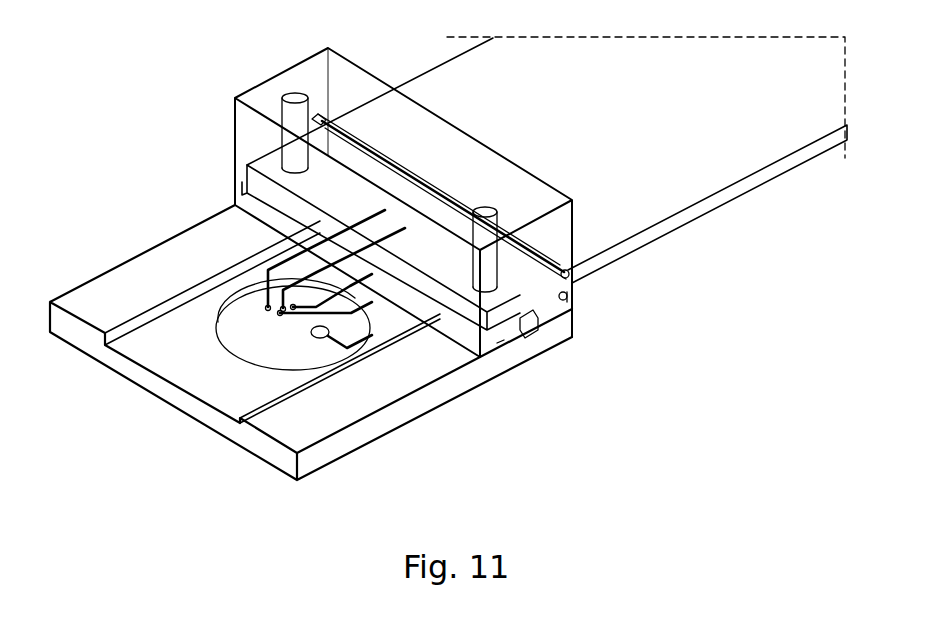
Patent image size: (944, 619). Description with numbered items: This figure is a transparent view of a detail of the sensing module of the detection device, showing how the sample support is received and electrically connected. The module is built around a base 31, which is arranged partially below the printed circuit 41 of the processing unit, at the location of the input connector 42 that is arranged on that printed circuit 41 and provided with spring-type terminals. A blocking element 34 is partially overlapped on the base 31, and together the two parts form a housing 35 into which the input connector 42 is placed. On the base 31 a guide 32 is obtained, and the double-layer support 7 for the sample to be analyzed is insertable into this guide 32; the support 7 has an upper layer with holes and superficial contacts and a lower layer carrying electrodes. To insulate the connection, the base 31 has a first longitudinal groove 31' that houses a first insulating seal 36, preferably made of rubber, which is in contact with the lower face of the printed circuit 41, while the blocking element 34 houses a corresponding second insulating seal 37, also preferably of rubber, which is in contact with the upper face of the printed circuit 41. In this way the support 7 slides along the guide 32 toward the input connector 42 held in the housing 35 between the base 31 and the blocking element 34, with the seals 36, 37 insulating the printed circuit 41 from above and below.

The double-layer support 7 is at (195, 320).
The base 31 is at (311, 355).
The first longitudinal groove 31' is at (587, 350).
The guide 32 is at (212, 392).
The blocking element 34 is at (262, 98).
The housing 35 is at (531, 335).
The first insulating seal 36 is at (570, 300).
The second insulating seal 37 is at (571, 279).
The printed circuit 41 is at (757, 183).
The input connector 42 is at (498, 343).